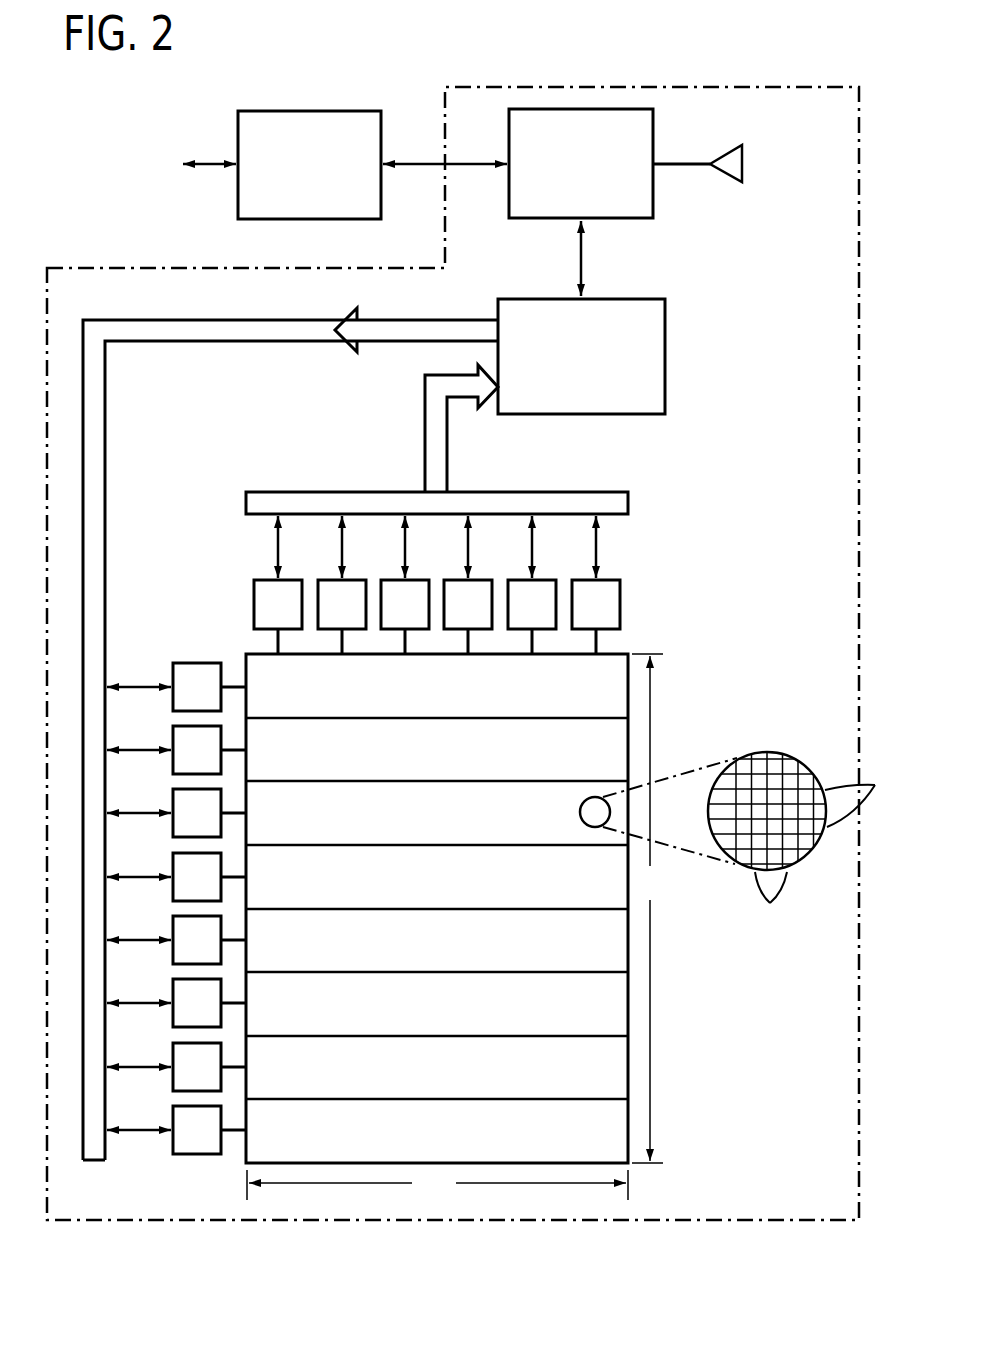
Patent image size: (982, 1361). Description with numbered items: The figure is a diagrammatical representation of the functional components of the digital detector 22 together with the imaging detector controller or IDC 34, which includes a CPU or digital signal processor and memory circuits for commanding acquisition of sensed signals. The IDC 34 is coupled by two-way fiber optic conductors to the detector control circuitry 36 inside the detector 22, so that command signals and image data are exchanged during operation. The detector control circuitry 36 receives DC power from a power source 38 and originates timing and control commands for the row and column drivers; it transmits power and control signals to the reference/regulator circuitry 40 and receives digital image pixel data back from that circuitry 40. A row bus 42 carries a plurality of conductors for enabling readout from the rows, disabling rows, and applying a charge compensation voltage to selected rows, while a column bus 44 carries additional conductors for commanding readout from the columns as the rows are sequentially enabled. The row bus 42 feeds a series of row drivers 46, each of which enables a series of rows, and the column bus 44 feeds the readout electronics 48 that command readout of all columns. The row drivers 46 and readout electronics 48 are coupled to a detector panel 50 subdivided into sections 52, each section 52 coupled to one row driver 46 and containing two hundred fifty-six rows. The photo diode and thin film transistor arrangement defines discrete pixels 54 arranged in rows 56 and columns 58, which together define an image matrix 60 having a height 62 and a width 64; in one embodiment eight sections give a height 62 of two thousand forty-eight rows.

The digital detector 22 is at (515, 85).
The imaging detector controller (IDC) 34 is at (283, 111).
The detector control circuitry 36 is at (653, 193).
The power source 38 is at (742, 160).
The reference/regulator circuitry 40 is at (667, 345).
The row bus 42 is at (105, 412).
The column bus 44 is at (293, 492).
The row drivers 46 is at (173, 800).
The readout electronics 48 is at (580, 580).
The detector panel 50 is at (634, 699).
The sections 52 is at (455, 830).
The pixels 54 is at (803, 778).
The rows 56 is at (867, 792).
The columns 58 is at (771, 904).
The image matrix 60 is at (728, 869).
The height 62 is at (648, 908).
The width 64 is at (437, 1186).